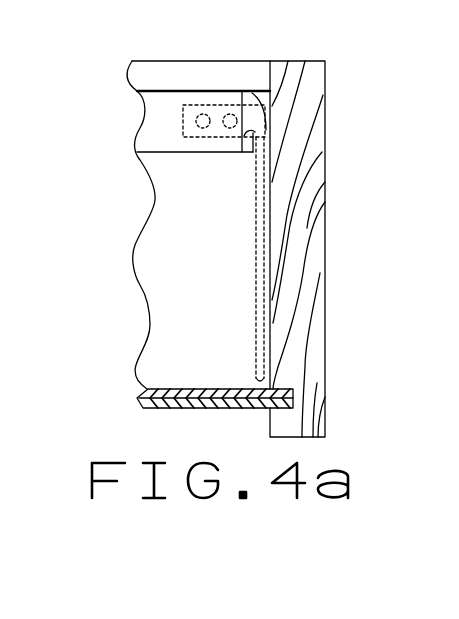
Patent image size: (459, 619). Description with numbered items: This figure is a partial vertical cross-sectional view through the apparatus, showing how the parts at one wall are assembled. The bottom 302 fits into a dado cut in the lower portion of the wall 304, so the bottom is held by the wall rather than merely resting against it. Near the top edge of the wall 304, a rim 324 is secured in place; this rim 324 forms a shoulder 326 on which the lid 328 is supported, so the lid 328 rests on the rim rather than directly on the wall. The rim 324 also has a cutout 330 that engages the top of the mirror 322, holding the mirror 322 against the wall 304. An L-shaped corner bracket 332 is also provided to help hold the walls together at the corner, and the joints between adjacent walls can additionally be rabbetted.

The bottom 302 is at (163, 389).
The wall 304 is at (307, 228).
The mirror 322 is at (256, 303).
The rim 324 is at (243, 140).
The shoulder 326 is at (266, 90).
The lid 328 is at (225, 72).
The cutout 330 is at (270, 143).
The L-shaped corner bracket 332 is at (183, 114).